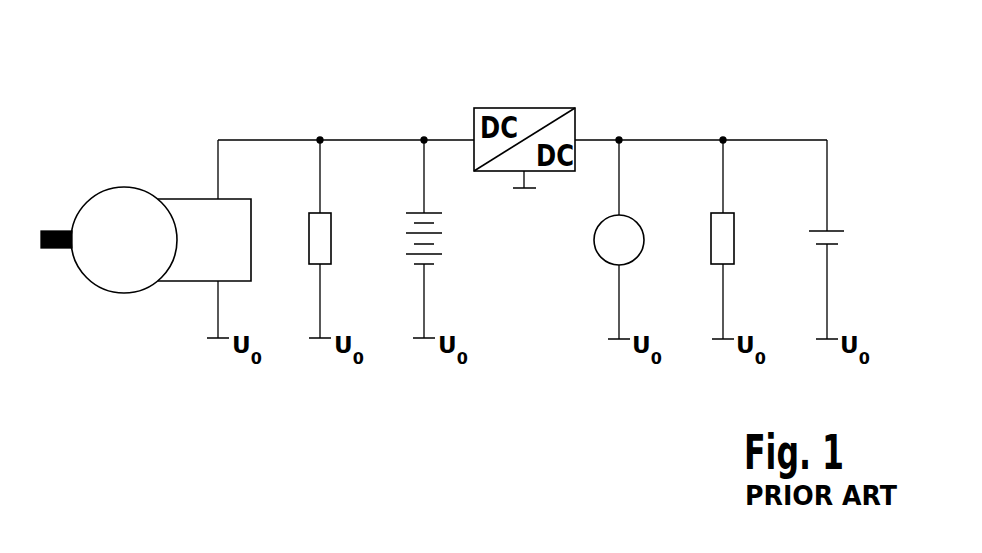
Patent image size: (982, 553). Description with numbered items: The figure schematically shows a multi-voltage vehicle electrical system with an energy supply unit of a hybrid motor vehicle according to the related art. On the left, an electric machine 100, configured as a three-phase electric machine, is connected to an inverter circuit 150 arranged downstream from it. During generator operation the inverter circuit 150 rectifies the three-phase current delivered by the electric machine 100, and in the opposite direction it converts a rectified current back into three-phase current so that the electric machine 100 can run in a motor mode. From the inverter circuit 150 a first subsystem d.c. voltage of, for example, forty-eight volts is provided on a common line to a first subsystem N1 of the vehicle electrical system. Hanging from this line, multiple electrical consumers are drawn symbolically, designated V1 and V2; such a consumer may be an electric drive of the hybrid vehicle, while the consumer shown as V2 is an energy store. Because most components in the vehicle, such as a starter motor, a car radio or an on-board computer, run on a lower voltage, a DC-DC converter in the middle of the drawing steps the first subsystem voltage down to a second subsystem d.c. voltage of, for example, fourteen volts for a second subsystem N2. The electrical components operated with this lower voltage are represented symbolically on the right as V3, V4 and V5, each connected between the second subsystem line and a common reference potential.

The electric machine 100 is at (114, 186).
The inverter circuit 150 is at (184, 191).
The first subsystem N1 is at (353, 100).
The second subsystem N2 is at (688, 97).
The electrical consumer V1 is at (340, 239).
The energy store V2 is at (445, 239).
The electrical component V3 is at (640, 239).
The electrical component V4 is at (743, 239).
The electrical component V5 is at (847, 239).